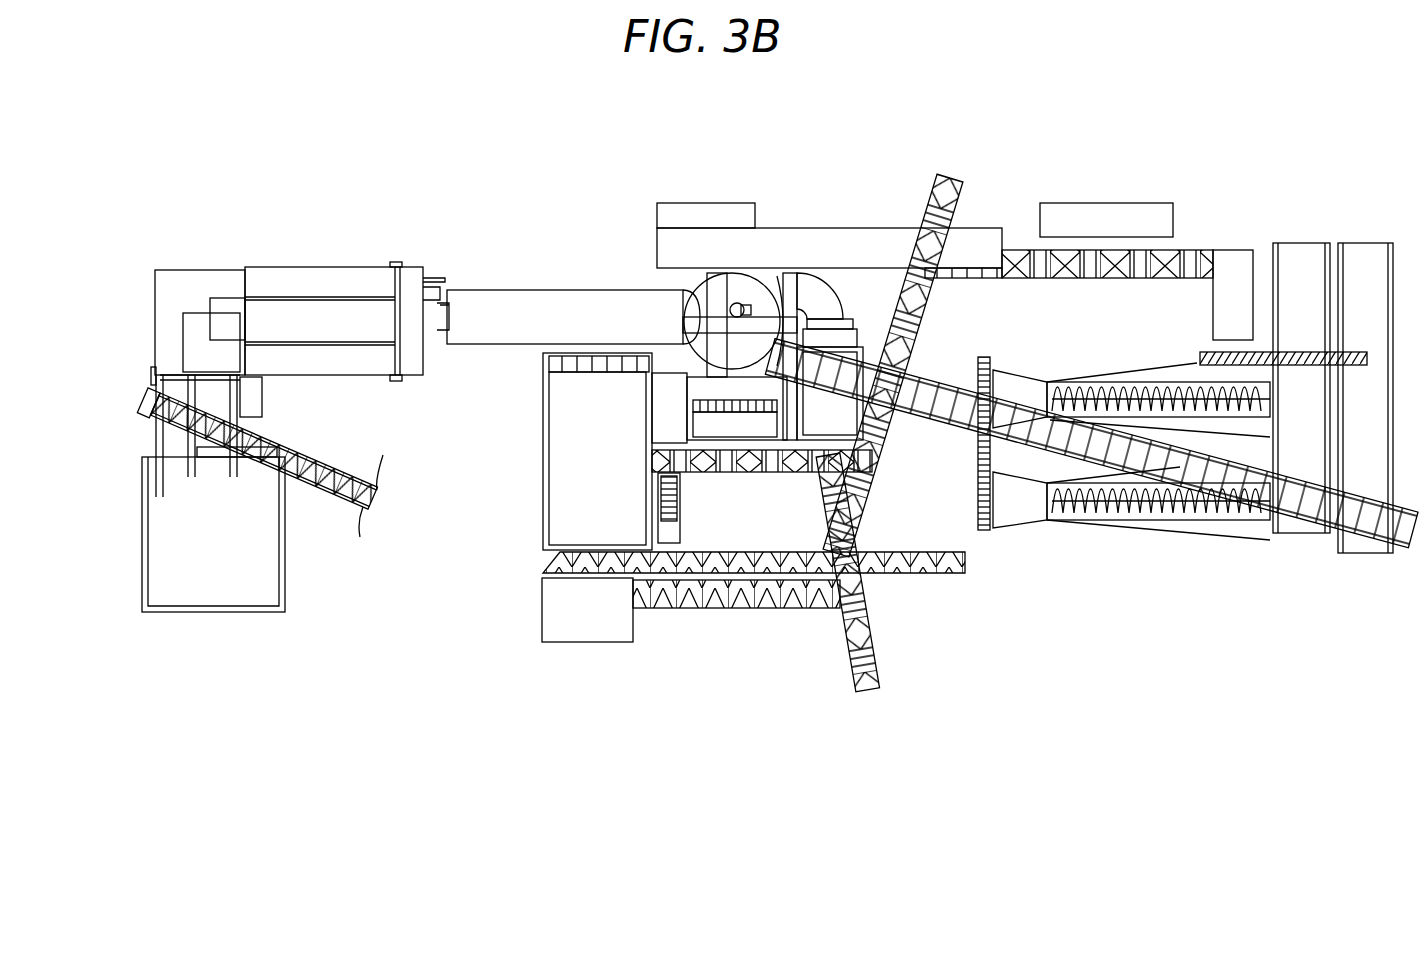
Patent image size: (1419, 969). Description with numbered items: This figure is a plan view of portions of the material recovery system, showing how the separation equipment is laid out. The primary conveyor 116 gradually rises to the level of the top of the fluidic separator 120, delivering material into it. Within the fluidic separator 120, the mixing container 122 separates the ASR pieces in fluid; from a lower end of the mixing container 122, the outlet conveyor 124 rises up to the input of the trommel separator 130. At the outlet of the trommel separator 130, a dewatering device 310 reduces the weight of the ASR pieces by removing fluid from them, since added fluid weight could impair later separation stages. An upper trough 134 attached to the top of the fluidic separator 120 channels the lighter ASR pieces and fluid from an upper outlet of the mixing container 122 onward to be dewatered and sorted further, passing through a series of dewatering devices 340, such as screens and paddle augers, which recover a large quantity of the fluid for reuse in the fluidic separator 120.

The primary conveyor 116 is at (953, 400).
The fluidic separator 120 is at (598, 266).
The mixing container 122 is at (695, 292).
The outlet conveyor 124 is at (497, 330).
The trommel separator 130 is at (312, 274).
The upper trough 134 is at (840, 237).
The dewatering device 310 is at (193, 275).
The dewatering devices 340 is at (1182, 330).